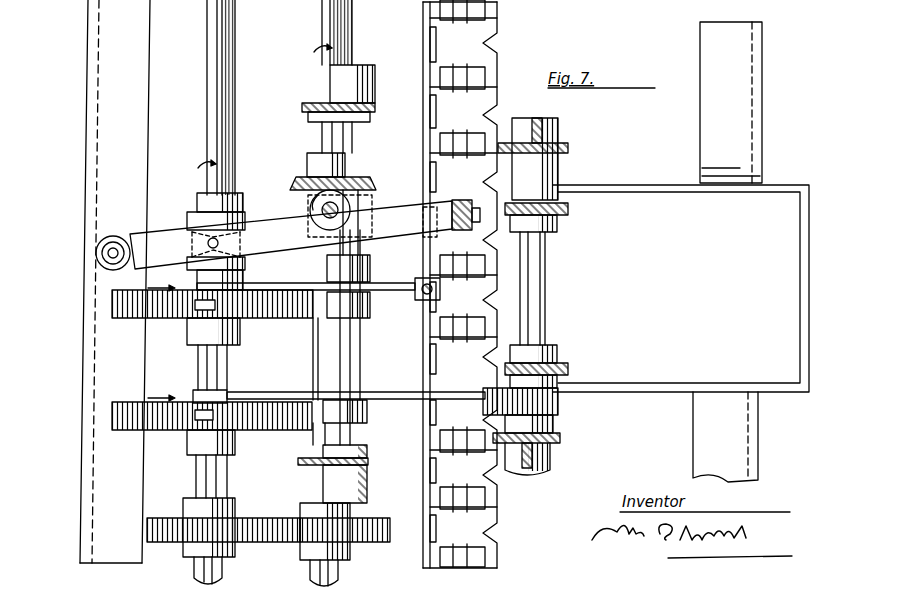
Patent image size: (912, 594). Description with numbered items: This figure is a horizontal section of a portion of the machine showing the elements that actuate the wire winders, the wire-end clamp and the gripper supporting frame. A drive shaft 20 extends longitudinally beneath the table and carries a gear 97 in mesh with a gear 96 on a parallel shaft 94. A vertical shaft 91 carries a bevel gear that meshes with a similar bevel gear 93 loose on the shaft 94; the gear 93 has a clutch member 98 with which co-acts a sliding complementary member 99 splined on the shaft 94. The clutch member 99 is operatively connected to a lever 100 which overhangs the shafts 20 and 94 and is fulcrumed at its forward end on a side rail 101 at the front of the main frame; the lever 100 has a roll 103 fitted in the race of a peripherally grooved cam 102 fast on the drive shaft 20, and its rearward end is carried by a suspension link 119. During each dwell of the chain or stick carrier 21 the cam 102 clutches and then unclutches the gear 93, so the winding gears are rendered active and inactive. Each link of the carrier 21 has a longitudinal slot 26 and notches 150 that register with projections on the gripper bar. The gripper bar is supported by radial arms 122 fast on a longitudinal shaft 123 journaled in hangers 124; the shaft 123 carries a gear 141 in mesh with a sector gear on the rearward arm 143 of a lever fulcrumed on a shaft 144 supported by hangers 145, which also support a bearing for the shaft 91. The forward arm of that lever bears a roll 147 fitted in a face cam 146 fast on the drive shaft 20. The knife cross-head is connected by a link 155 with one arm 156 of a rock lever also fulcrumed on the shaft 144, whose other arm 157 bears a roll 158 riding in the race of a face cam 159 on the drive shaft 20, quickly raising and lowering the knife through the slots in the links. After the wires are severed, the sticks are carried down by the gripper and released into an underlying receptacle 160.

The drive shaft 20 is at (213, 43).
The chain or stick carrier 21 is at (463, 283).
The slot 26 is at (432, 35).
The vertical shaft 91 is at (306, 176).
The bevel gear 93 is at (362, 189).
The shaft 94 is at (340, 18).
The gear 96 is at (352, 542).
The gear 97 is at (165, 545).
The clutch member 98 is at (302, 200).
The sliding clutch member 99 is at (310, 211).
The lever 100 is at (288, 235).
The side rail 101 is at (110, 97).
The peripherally grooved cam 102 is at (185, 214).
The roll 103 is at (243, 250).
The suspension link 119 is at (432, 230).
The radial arms 122 is at (568, 209).
The longitudinal shaft 123 is at (546, 285).
The hangers 124 is at (570, 147).
The gear 141 is at (560, 400).
The rearward arm 143 is at (382, 400).
The shaft 144 is at (338, 355).
The hangers 145 is at (304, 103).
The face cam 146 is at (110, 415).
The roll 147 is at (205, 415).
The notches 150 is at (485, 533).
The link 155 is at (440, 292).
The arm 156 is at (402, 286).
The arm 157 is at (268, 287).
The roll 158 is at (205, 305).
The face cam 159 is at (110, 302).
The receptacle 160 is at (681, 288).